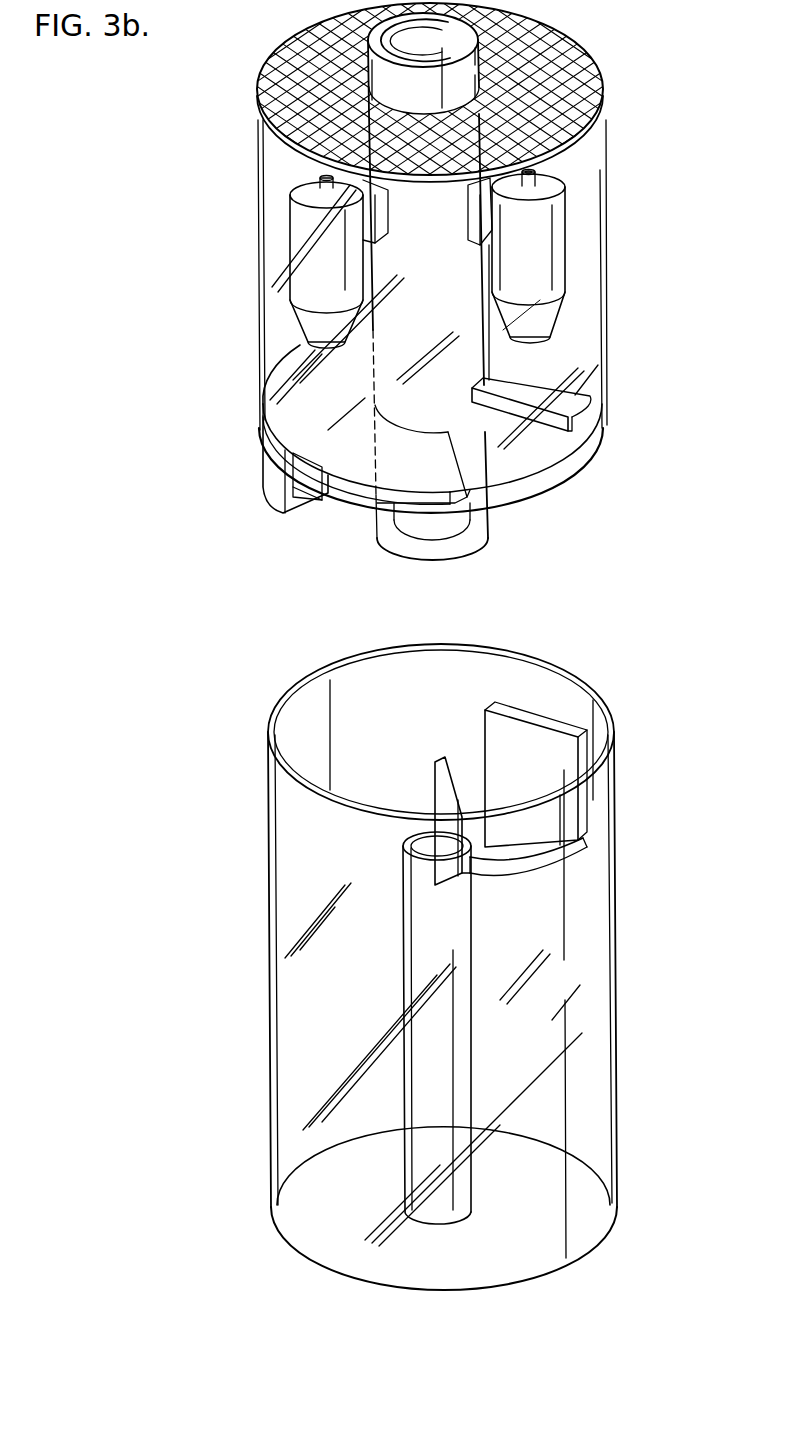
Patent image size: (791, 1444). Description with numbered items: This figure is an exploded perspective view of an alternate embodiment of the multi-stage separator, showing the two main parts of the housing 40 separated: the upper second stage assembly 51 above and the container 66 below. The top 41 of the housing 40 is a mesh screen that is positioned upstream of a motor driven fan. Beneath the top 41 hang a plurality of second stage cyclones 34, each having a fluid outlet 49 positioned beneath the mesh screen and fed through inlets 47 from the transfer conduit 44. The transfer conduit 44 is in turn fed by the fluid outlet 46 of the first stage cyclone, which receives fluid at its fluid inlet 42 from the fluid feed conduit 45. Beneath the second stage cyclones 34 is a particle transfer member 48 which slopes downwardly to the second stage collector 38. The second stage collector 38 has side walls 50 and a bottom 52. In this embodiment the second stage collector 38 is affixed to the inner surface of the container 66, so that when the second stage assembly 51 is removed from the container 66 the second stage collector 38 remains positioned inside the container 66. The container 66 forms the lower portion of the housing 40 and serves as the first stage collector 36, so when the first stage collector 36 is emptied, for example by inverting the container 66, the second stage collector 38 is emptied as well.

The housing 40 is at (186, 17).
The top 41 is at (590, 52).
The second stage cyclones 34 is at (555, 236).
The fluid outlet 49 is at (556, 152).
The inlets 47 is at (477, 212).
The second stage assembly 51 is at (262, 320).
The transfer conduit 44 is at (463, 360).
The particle transfer member 48 is at (287, 413).
The fluid inlet 42 is at (298, 495).
The fluid outlet 46 is at (387, 555).
The second stage collector 38 is at (527, 753).
The side walls 50 is at (590, 735).
The bottom 52 is at (580, 845).
The fluid feed conduit 45 is at (457, 1030).
The container 66 is at (618, 1042).
The first stage collector 36 is at (580, 1190).